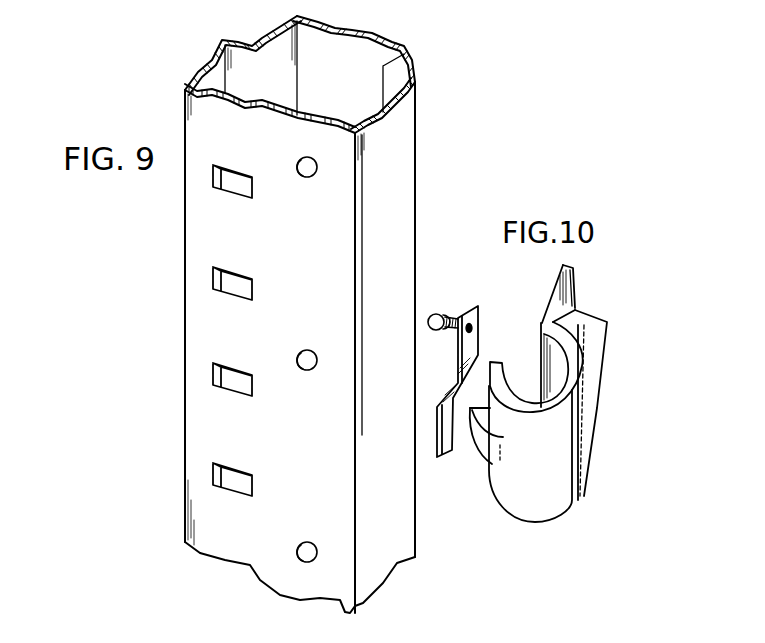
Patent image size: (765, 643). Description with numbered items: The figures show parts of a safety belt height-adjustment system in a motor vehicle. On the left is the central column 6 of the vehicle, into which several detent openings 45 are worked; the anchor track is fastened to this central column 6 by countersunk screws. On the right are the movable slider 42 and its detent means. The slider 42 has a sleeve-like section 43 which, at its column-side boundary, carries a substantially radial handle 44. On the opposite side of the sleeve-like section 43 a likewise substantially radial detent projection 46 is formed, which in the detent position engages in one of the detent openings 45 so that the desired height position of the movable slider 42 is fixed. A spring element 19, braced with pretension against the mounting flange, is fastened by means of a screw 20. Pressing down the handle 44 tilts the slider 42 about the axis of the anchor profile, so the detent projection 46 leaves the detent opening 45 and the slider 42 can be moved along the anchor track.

In FIG. 9, the central column 6 is at (405, 130).
In FIG. 9, the detent openings 45 is at (232, 290).
In FIG. 10, the spring element 19 is at (480, 317).
In FIG. 10, the screw 20 is at (446, 316).
In FIG. 10, the movable slider 42 is at (535, 417).
In FIG. 10, the sleeve-like section 43 is at (570, 464).
In FIG. 10, the handle 44 is at (592, 334).
In FIG. 10, the detent projection 46 is at (492, 460).